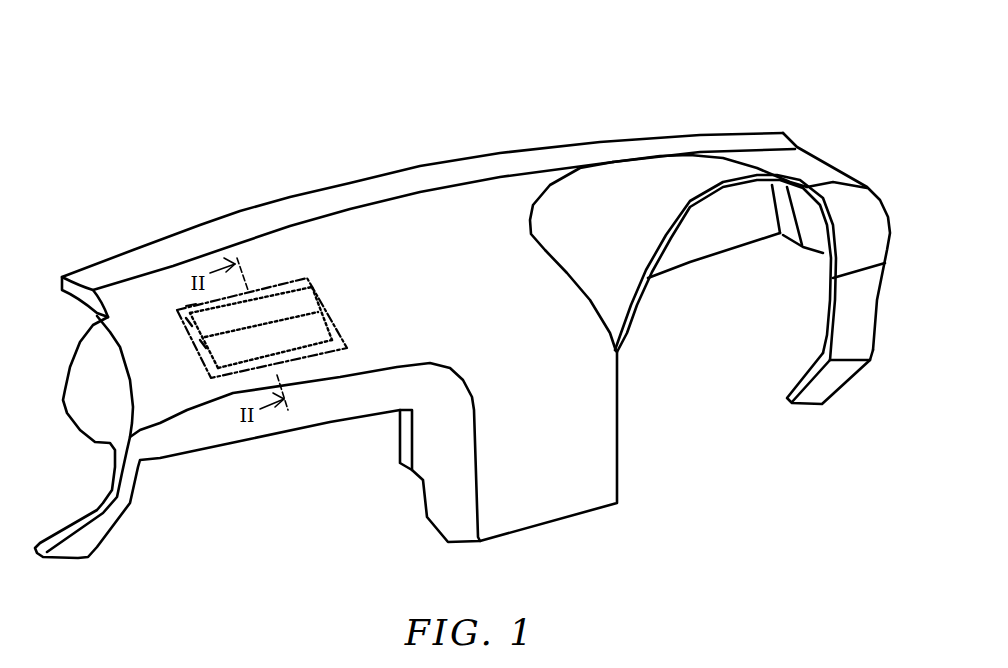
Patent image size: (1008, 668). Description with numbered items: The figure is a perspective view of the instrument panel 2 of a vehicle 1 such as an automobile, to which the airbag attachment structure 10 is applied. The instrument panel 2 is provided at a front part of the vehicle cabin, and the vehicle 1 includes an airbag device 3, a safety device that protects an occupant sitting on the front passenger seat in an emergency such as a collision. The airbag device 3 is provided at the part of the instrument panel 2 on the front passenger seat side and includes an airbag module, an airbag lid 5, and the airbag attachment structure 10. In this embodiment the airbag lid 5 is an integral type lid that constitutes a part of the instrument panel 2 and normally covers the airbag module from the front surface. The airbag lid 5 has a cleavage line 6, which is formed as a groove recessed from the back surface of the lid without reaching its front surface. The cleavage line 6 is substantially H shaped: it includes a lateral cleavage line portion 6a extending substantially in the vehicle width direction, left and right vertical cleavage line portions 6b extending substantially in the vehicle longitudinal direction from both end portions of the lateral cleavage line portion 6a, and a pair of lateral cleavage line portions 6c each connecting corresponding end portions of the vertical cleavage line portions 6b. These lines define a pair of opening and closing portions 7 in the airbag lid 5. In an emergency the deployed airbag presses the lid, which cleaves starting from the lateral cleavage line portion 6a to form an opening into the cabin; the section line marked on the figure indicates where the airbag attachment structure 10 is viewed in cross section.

The vehicle 1 is at (825, 88).
The instrument panel 2 is at (427, 222).
The airbag device 3 is at (289, 276).
The airbag lid 5 is at (272, 309).
The cleavage line 6 is at (256, 356).
The lateral cleavage line portion 6a is at (227, 333).
The vertical cleavage line portions 6b is at (195, 305).
The lateral cleavage line portions 6c is at (212, 309).
The opening and closing portions 7 is at (204, 343).
The airbag attachment structure 10 is at (193, 304).